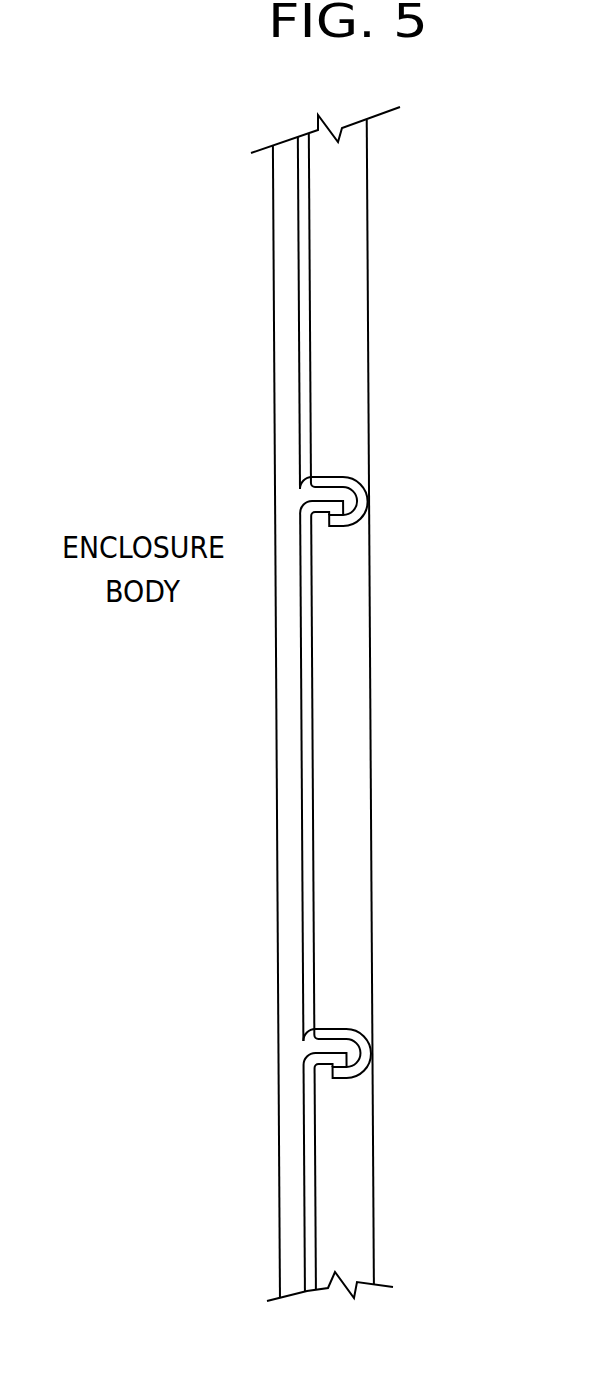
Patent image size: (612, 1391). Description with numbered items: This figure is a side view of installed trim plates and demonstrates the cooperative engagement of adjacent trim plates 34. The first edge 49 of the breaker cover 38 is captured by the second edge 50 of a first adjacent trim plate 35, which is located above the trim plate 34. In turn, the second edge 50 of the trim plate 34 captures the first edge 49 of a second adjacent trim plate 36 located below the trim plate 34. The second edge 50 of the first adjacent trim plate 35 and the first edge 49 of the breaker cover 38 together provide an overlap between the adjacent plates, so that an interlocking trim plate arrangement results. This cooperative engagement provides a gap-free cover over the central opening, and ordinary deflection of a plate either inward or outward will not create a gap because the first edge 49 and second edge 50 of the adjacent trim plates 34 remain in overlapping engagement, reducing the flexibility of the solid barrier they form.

The trim plate 34 is at (377, 704).
The first adjacent trim plate 35 is at (400, 330).
The second adjacent trim plate 36 is at (332, 1215).
The breaker cover 38 is at (385, 795).
The first edge 49 is at (354, 1053).
The second edge 50 is at (352, 470).